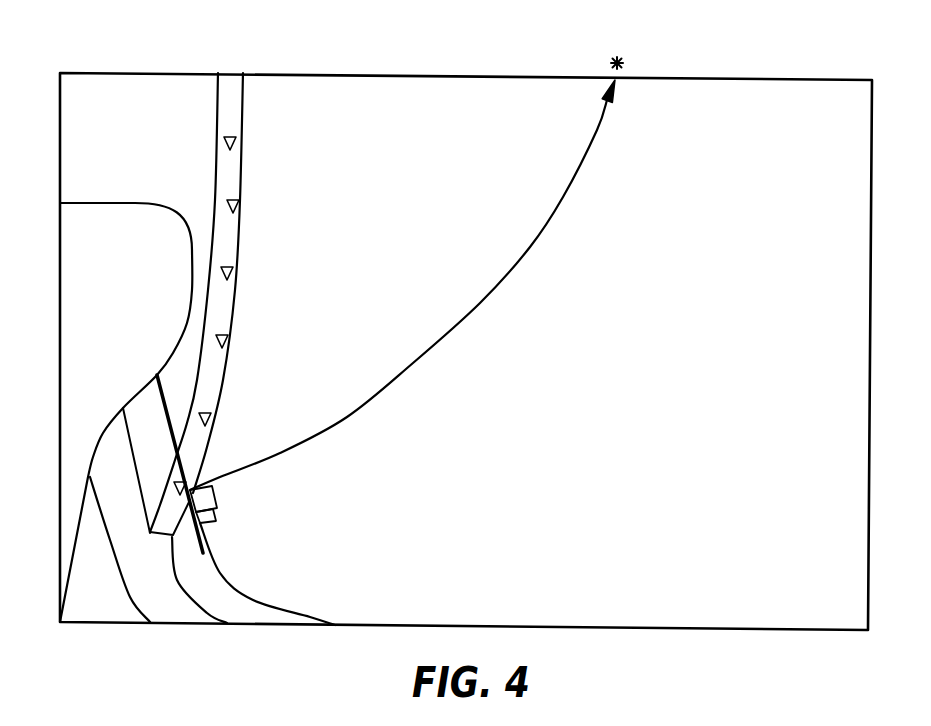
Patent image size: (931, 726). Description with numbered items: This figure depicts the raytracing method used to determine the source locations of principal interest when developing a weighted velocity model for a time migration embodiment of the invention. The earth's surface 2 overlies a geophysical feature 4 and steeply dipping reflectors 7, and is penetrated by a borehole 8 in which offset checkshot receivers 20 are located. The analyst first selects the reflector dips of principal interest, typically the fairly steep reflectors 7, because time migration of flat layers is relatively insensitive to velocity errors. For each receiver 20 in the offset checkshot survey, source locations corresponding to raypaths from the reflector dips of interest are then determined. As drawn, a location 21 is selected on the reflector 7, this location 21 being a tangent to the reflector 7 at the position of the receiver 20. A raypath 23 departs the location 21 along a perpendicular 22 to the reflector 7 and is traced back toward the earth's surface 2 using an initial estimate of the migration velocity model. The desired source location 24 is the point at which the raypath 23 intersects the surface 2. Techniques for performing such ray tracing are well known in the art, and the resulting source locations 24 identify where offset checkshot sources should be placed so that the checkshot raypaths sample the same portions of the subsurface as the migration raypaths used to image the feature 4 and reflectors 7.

The earth's surface 2 is at (838, 78).
The geophysical feature 4 is at (70, 262).
The steeply dipping reflectors 7 is at (142, 608).
The borehole 8 is at (153, 537).
The offset checkshot receivers 20 is at (238, 145).
The location on reflector 21 is at (210, 518).
The perpendicular to reflector 22 is at (216, 496).
The raypath 23 is at (422, 355).
The source locations 24 is at (622, 52).